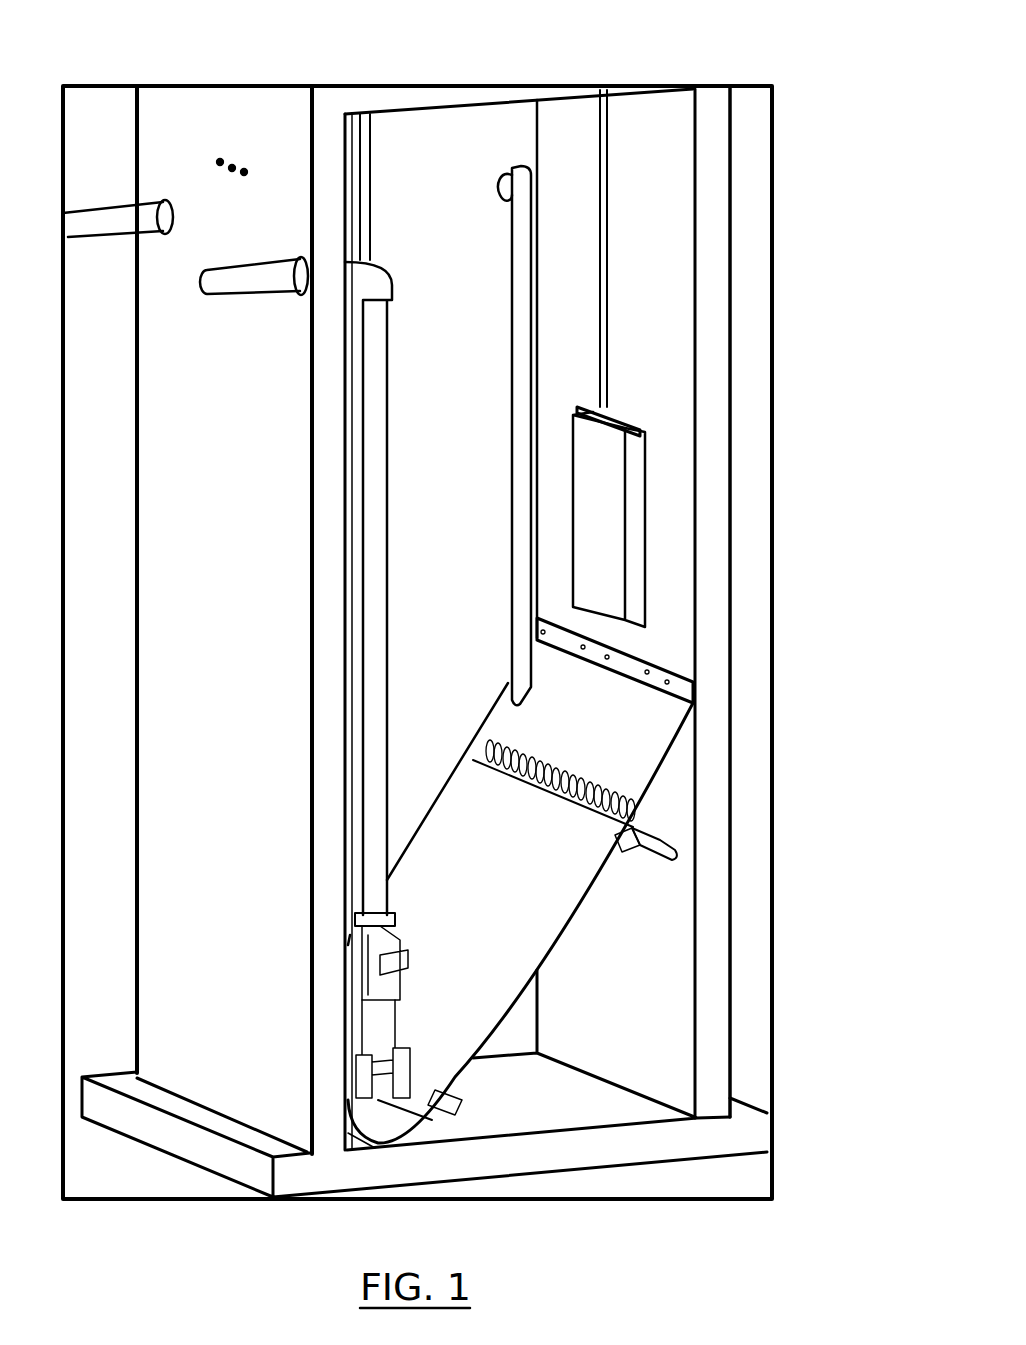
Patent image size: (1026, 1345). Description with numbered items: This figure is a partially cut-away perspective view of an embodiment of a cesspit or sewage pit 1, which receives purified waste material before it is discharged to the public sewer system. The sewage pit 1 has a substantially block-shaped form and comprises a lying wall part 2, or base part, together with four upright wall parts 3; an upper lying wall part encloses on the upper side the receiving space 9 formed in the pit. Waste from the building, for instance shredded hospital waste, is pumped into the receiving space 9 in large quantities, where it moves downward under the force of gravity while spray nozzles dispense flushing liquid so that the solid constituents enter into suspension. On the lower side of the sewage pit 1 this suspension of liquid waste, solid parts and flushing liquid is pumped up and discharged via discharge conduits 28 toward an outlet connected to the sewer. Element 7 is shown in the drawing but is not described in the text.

The sewage pit 1 is at (793, 343).
The lying wall part 2 is at (582, 1147).
The upright wall parts 3 is at (198, 910).
The pivot / hinge of chute 7 is at (663, 853).
The receiving space 9 is at (463, 327).
The discharge conduits 28 is at (372, 568).